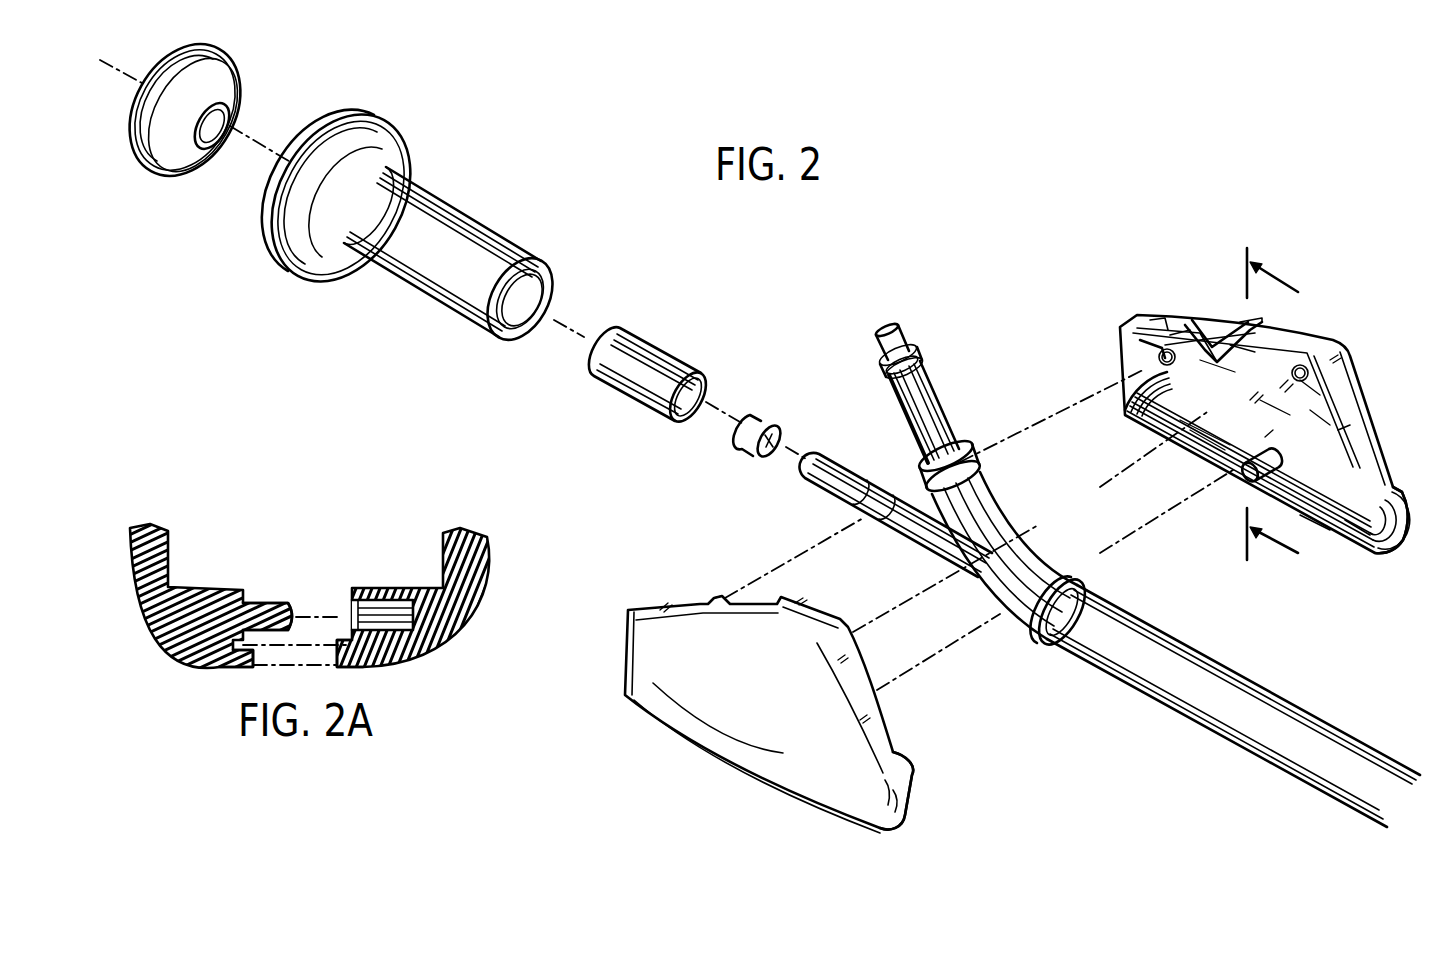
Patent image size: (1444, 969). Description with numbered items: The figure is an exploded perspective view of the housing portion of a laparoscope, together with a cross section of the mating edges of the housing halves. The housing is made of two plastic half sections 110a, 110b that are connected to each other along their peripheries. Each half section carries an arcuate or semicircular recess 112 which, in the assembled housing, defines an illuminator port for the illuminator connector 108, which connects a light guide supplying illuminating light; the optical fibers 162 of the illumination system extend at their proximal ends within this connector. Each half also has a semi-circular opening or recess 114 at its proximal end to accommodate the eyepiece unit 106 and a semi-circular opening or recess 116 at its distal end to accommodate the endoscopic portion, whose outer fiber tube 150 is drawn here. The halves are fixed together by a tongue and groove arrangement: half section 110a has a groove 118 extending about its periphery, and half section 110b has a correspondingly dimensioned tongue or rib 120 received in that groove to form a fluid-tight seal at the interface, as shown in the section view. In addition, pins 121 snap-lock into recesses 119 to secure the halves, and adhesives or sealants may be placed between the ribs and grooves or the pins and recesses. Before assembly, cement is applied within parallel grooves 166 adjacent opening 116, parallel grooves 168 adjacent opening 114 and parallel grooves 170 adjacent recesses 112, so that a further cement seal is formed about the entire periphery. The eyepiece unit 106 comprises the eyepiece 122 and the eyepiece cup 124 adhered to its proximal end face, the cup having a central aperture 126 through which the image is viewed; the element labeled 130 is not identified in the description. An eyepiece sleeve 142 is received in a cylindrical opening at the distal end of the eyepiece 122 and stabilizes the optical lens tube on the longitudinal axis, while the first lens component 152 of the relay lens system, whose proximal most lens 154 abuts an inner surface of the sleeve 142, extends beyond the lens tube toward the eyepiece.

In FIG. 2, the eyepiece unit 106 is at (558, 182).
In FIG. 2, the illuminator connector 108 is at (910, 378).
In FIG. 2, the half section 110a is at (793, 711).
In FIG. 2A, the half section 110a is at (173, 570).
In FIG. 2, the half section 110b is at (1332, 363).
In FIG. 2A, the half section 110b is at (482, 572).
In FIG. 2, the arcuate or semicircular recess 112 is at (722, 598).
In FIG. 2, the semi-circular opening or recess 114 is at (1152, 345).
In FIG. 2, the semi-circular opening or recess 116 is at (905, 797).
In FIG. 2A, the groove 118 is at (222, 668).
In FIG. 2, the recesses 119 is at (1195, 300).
In FIG. 2A, the recesses 119 is at (377, 605).
In FIG. 2, the tongue or rib 120 is at (1158, 322).
In FIG. 2A, the tongue or rib 120 is at (352, 660).
In FIG. 2A, the pins 121 is at (270, 602).
In FIG. 2, the eyepiece 122 is at (442, 292).
In FIG. 2, the eyepiece cup 124 is at (146, 180).
In FIG. 2, the central aperture 126 is at (222, 117).
In FIG. 2, the disc 130 is at (226, 80).
In FIG. 2, the eyepiece sleeve 142 is at (665, 350).
In FIG. 2, the outer fiber tube 150 is at (1190, 676).
In FIG. 2, the first lens component 152 is at (835, 422).
In FIG. 2, the proximal most lens 154 is at (752, 458).
In FIG. 2, the optical fibers 162 is at (1043, 640).
In FIG. 2, the parallel grooves 166 is at (1128, 418).
In FIG. 2, the parallel grooves 168 is at (1135, 392).
In FIG. 2, the parallel grooves 170 is at (1187, 325).